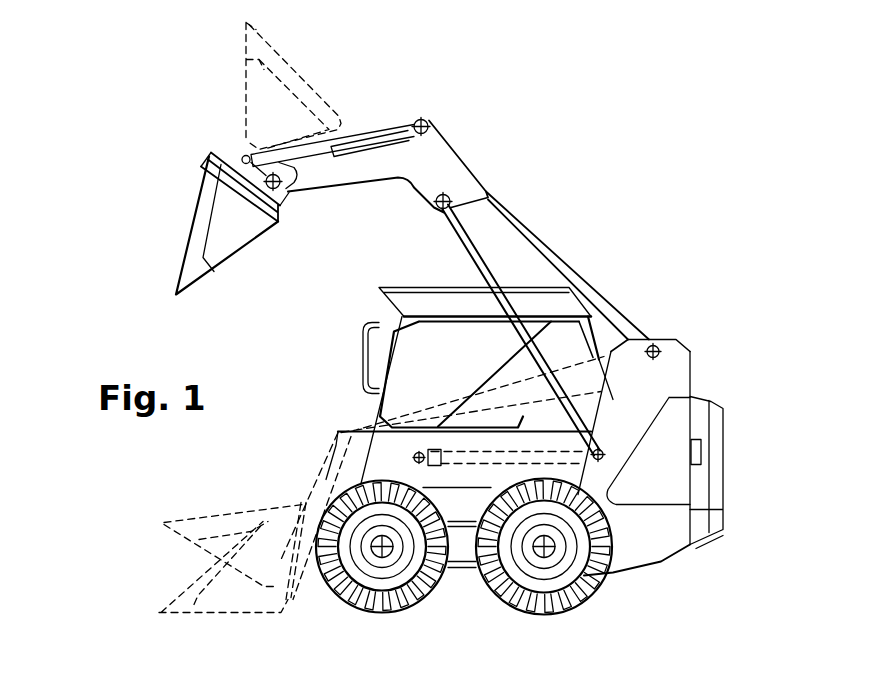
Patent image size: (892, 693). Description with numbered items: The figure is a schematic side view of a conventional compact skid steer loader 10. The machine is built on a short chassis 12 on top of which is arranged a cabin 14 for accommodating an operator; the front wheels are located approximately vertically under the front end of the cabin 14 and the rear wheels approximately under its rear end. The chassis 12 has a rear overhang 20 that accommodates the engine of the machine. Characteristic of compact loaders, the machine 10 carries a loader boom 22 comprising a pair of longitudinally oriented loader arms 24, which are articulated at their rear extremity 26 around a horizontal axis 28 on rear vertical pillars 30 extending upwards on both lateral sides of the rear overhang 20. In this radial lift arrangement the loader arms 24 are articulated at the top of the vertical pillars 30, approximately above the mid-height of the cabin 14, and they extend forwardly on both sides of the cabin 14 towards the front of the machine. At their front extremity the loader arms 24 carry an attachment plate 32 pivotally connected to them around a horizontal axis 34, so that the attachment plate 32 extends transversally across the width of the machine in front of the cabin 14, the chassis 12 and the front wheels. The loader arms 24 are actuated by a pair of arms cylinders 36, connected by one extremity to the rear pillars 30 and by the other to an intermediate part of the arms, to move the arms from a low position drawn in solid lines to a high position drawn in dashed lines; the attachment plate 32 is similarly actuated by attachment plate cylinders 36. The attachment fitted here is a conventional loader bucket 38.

The compact skid steer loader 10 is at (628, 219).
The chassis 12 is at (460, 550).
The cabin 14 is at (403, 277).
The rear overhang 20 is at (665, 576).
The loader boom 22 is at (481, 166).
The loader arms 24 is at (493, 215).
The rear extremity 26 is at (620, 320).
The horizontal axis 28 is at (666, 347).
The rear vertical pillars 30 is at (657, 381).
The attachment plate 32 is at (221, 175).
The horizontal axis 34 is at (577, 300).
The arms cylinders 36 is at (375, 128).
The loader bucket 38 is at (215, 195).